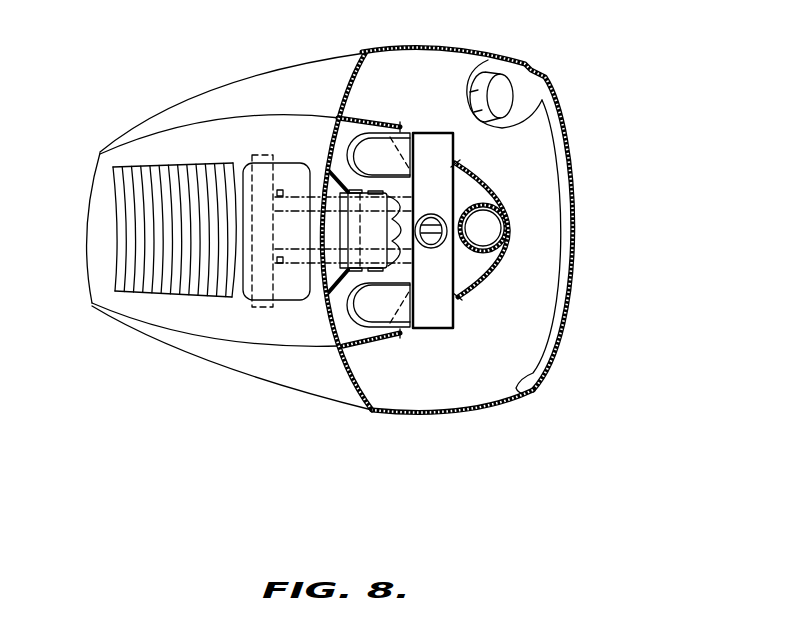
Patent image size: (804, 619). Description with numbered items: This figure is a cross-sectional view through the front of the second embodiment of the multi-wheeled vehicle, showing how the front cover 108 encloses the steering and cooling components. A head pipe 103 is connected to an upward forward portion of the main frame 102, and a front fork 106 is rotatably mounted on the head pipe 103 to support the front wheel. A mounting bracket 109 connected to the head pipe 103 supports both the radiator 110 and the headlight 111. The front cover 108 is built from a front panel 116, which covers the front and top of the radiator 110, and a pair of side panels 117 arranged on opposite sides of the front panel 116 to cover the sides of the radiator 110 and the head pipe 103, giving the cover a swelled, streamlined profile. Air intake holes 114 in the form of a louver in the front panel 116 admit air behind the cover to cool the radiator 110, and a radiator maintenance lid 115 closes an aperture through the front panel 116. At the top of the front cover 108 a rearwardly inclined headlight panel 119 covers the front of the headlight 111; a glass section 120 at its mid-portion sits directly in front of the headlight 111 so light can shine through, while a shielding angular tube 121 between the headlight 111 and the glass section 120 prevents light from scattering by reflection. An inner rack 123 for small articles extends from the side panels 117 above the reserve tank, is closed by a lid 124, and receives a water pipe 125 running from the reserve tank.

The main frame 102 is at (502, 205).
The head pipe 103 is at (437, 212).
The front fork 106 is at (377, 150).
The front cover 108 is at (190, 94).
The mounting bracket 109 is at (413, 270).
The radiator 110 is at (262, 155).
The headlight 111 is at (377, 222).
The air intake holes 114 is at (150, 173).
The radiator maintenance lid 115 is at (285, 290).
The front panel 116 is at (177, 313).
The side panels 117 is at (237, 97).
The headlight panel 119 is at (353, 83).
The glass section 120 is at (318, 212).
The shielding angular tube 121 is at (327, 291).
The inner rack 123 is at (483, 388).
The lid 124 is at (577, 187).
The water pipe 125 is at (502, 93).